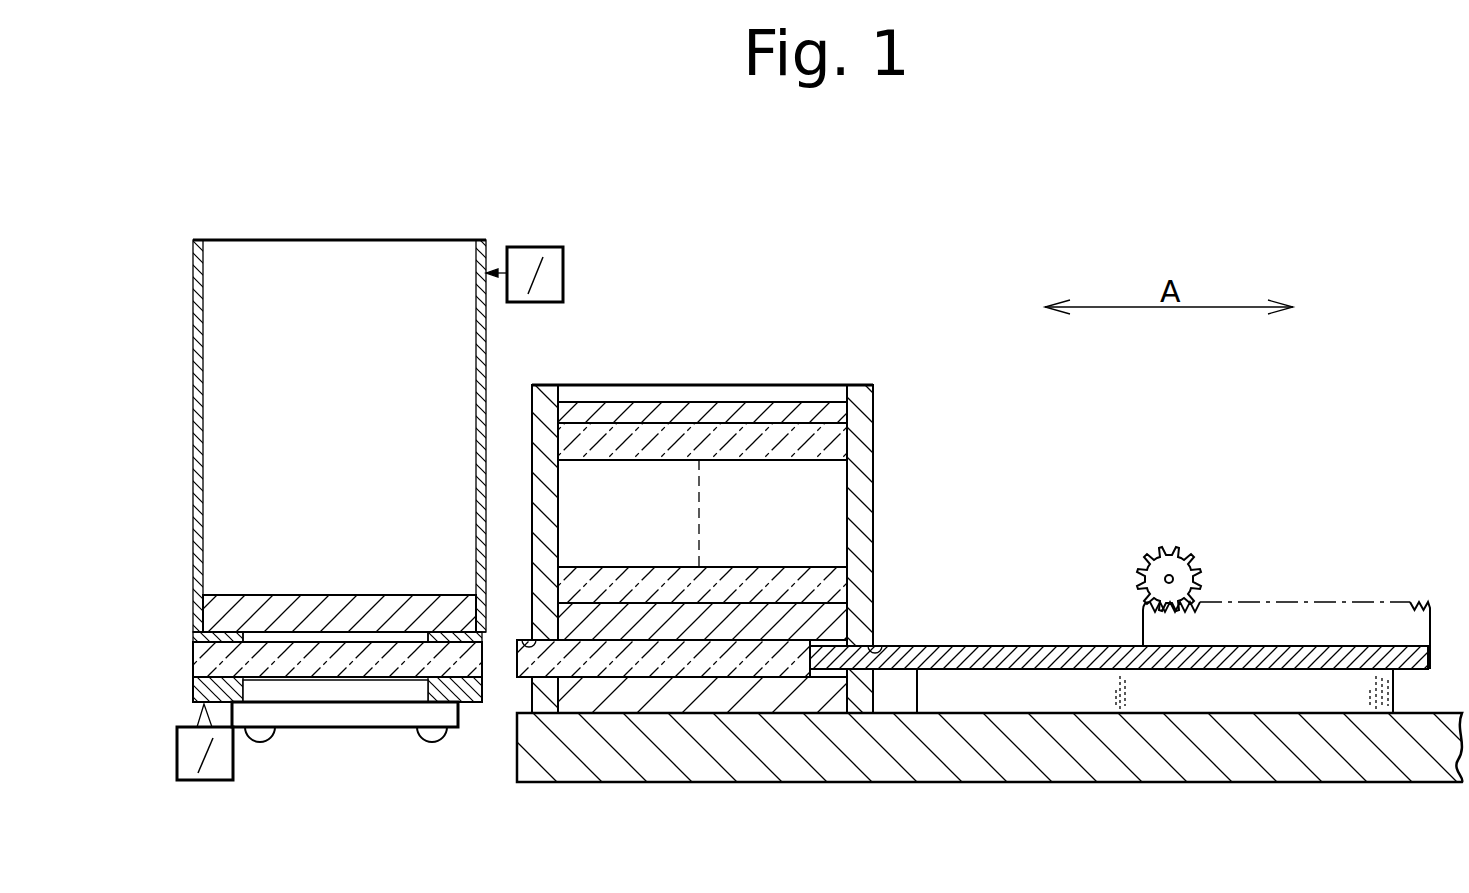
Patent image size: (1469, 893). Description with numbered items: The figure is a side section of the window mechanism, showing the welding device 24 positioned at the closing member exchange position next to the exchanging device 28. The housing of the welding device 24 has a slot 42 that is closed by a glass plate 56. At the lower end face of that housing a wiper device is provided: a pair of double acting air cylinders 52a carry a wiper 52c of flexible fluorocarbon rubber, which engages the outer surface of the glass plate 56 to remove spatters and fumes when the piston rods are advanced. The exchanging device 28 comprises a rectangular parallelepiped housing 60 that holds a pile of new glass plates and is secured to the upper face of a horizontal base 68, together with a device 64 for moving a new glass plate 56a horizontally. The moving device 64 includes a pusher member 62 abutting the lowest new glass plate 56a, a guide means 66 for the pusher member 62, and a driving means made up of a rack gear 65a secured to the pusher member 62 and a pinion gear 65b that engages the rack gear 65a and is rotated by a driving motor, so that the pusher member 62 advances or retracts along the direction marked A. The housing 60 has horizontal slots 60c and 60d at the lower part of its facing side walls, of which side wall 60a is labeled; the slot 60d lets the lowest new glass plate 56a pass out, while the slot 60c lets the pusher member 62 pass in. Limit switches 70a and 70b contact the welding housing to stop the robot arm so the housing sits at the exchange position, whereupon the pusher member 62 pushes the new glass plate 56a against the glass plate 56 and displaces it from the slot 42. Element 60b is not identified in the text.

The welding device 24 is at (325, 216).
The device for exchanging the glass plate 28 is at (965, 270).
The slot 42 is at (420, 689).
The double acting air cylinders 52a is at (257, 745).
The wiper 52c is at (337, 730).
The glass plate 56 is at (195, 660).
The new glass plate 56a is at (517, 668).
The housing 60 is at (748, 333).
The side wall 60a is at (873, 398).
The top plate of frame 60b is at (532, 388).
The horizontal slot 60c is at (868, 656).
The horizontal slot 60d is at (524, 396).
The pusher member 62 is at (1013, 644).
The device for moving a new glass plate 64 is at (1330, 487).
The rack gear 65a is at (1323, 621).
The pinion gear 65b is at (1183, 548).
The guide means 66 is at (1078, 702).
The horizontal base 68 is at (873, 786).
The limit switch 70a is at (203, 782).
The limit switch 70b is at (563, 272).